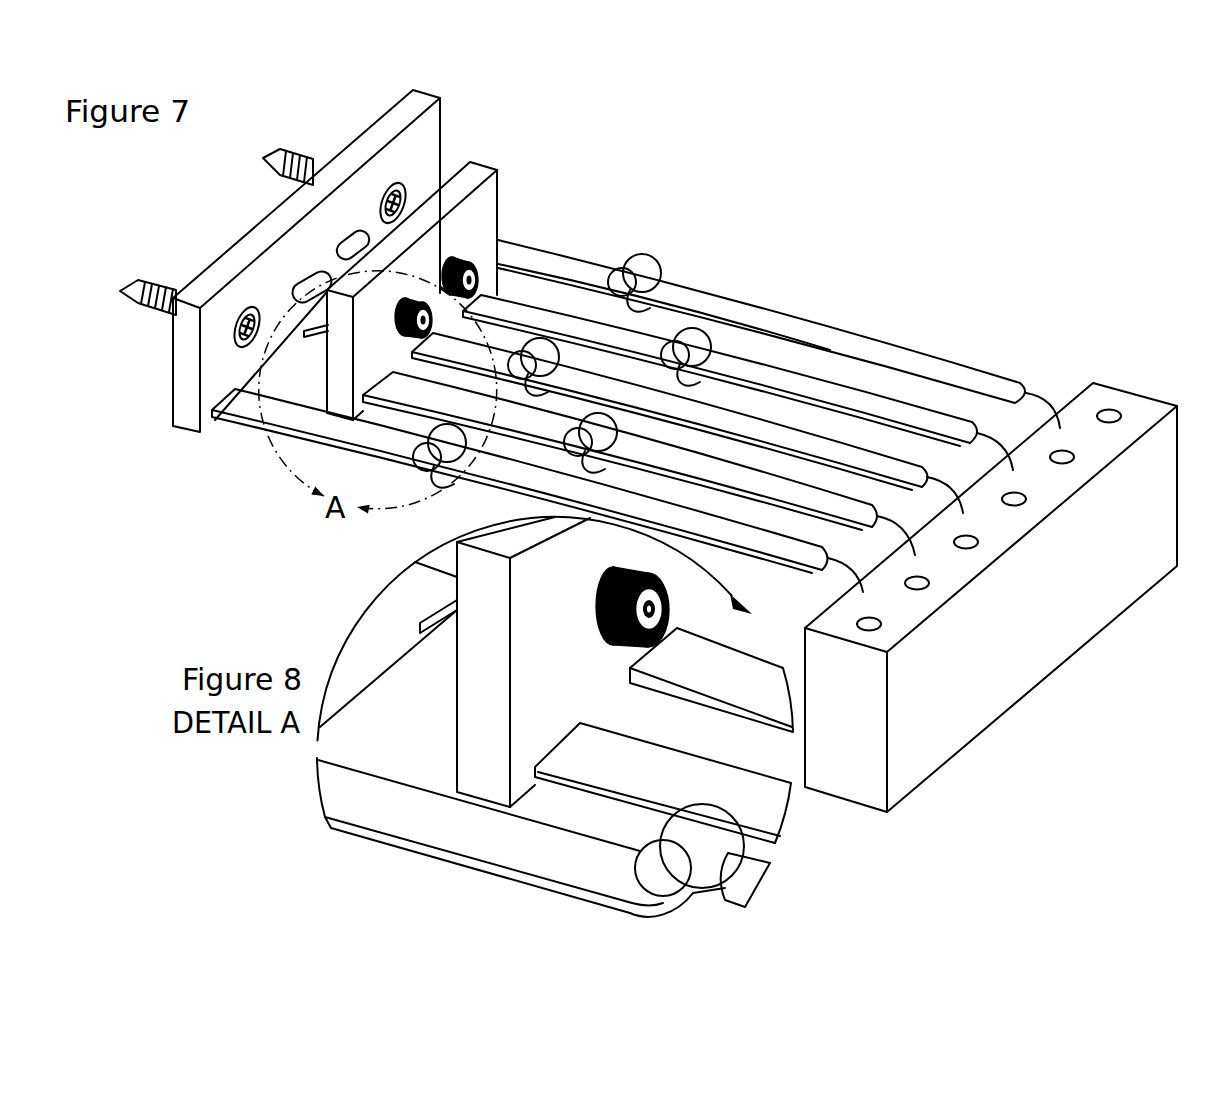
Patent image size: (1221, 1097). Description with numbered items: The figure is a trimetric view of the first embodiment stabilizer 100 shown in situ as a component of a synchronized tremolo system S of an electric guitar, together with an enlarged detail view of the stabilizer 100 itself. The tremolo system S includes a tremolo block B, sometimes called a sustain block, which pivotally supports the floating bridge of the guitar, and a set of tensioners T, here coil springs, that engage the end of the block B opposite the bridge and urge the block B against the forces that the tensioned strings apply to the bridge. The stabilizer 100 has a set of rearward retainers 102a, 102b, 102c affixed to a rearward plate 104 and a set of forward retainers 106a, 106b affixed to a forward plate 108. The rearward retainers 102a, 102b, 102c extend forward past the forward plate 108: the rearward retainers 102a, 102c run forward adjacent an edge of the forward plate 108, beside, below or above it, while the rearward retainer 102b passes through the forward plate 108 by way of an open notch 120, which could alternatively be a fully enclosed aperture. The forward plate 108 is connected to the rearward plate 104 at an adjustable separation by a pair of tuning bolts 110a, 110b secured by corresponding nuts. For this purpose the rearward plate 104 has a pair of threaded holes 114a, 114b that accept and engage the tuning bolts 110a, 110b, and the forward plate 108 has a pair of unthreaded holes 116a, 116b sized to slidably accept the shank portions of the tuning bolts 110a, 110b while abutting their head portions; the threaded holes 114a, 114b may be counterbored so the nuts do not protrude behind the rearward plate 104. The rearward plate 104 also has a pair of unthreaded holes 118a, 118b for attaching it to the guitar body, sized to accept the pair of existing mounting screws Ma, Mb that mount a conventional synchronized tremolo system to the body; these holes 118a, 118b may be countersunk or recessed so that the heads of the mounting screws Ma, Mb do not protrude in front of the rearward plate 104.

In FIG. 7, the stabilizer 100 is at (670, 217).
In FIG. 7, the rearward retainer 102a is at (359, 457).
In FIG. 8, the rearward retainer 102a is at (536, 874).
In FIG. 7, the rearward retainer 102b is at (431, 369).
In FIG. 8, the rearward retainer 102b is at (720, 703).
In FIG. 7, the rearward retainer 102c is at (512, 278).
In FIG. 7, the rearward plate 104 is at (307, 260).
In FIG. 7, the forward retainer 106a is at (391, 409).
In FIG. 8, the forward retainer 106a is at (782, 815).
In FIG. 7, the forward retainer 106b is at (484, 327).
In FIG. 7, the forward plate 108 is at (412, 289).
In FIG. 8, the forward plate 108 is at (578, 581).
In FIG. 7, the tuning bolt 110a is at (397, 328).
In FIG. 8, the tuning bolt 110a is at (610, 628).
In FIG. 7, the tuning bolt 110b is at (446, 292).
In FIG. 7, the threaded hole 114a is at (293, 283).
In FIG. 7, the threaded hole 114b is at (343, 237).
In FIG. 8, the unthreaded hole 116a is at (610, 630).
In FIG. 7, the unthreaded hole 116b is at (467, 261).
In FIG. 7, the unthreaded hole 118a is at (243, 313).
In FIG. 7, the unthreaded hole 118b is at (402, 190).
In FIG. 8, the notch 120 is at (633, 700).
In FIG. 7, the mounting screw Ma is at (120, 280).
In FIG. 7, the mounting screw Mb is at (264, 157).
In FIG. 7, the synchronized tremolo system S is at (983, 122).
In FIG. 7, the tensioners T is at (973, 320).
In FIG. 8, the tensioners T is at (749, 897).
In FIG. 7, the tremolo block B is at (858, 733).